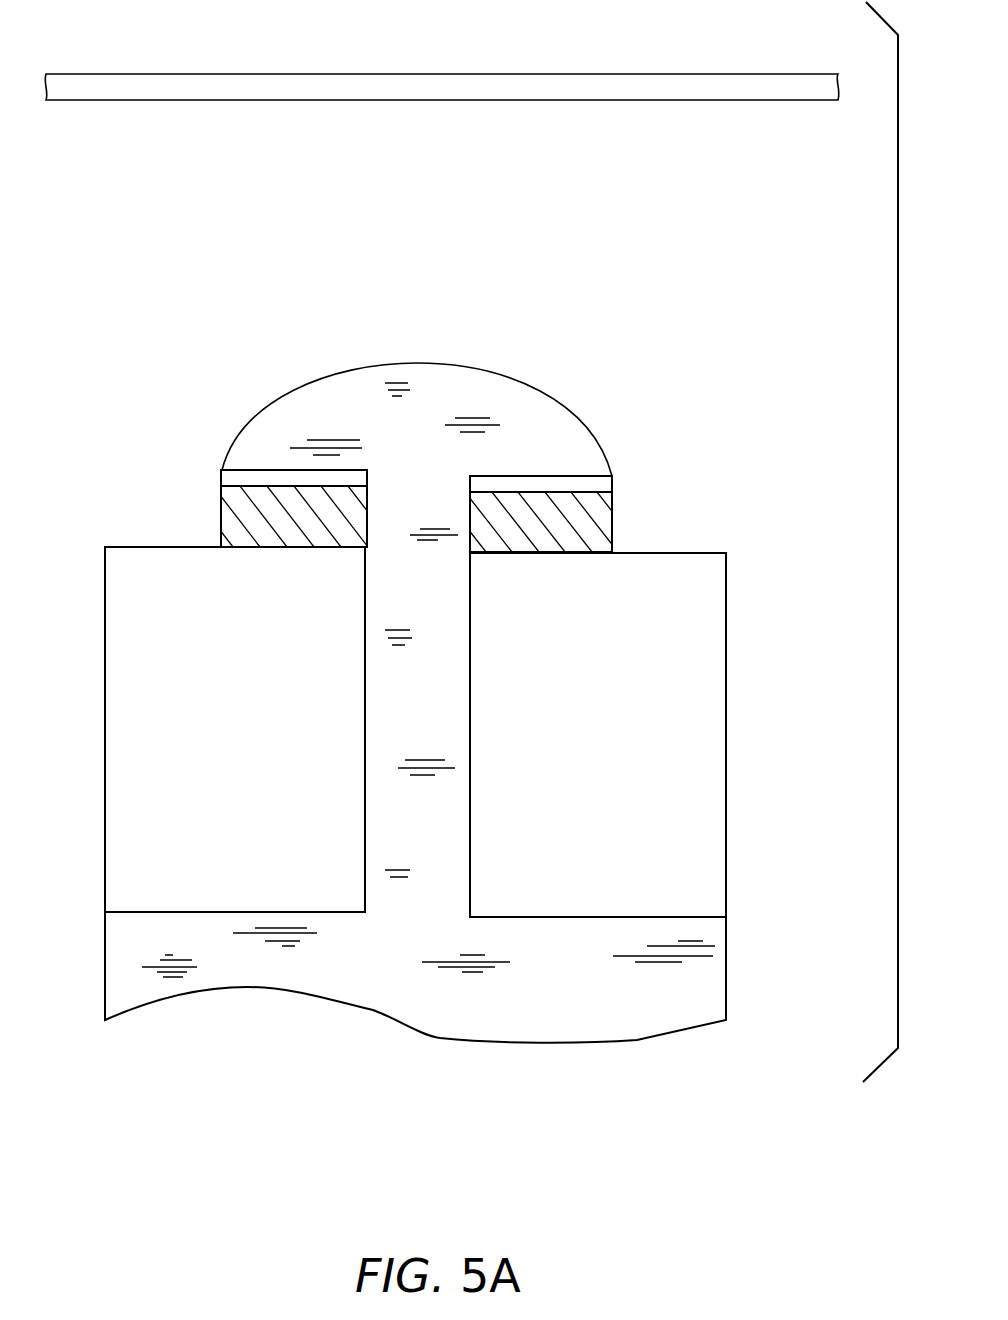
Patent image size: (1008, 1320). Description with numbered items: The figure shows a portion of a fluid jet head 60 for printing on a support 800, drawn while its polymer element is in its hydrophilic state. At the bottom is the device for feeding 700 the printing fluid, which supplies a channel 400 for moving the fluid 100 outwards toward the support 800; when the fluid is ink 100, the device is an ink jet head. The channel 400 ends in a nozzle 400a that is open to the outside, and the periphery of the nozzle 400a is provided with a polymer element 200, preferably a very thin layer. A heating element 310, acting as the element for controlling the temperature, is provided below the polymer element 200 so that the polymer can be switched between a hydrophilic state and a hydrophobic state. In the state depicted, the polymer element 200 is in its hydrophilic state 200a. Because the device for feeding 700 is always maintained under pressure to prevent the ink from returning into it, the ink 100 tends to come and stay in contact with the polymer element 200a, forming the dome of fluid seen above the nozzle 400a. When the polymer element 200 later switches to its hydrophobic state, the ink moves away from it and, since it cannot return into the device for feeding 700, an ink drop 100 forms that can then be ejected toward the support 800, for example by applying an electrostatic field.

The support 800 is at (588, 87).
The fluid jet head 60 is at (106, 494).
The ink 100 is at (440, 833).
The channel 400 is at (470, 750).
The nozzle 400a is at (470, 635).
The hydrophilic state 200a is at (578, 480).
The heating element 310 is at (221, 493).
The polymer element 200 is at (533, 432).
The device for feeding 700 is at (260, 967).